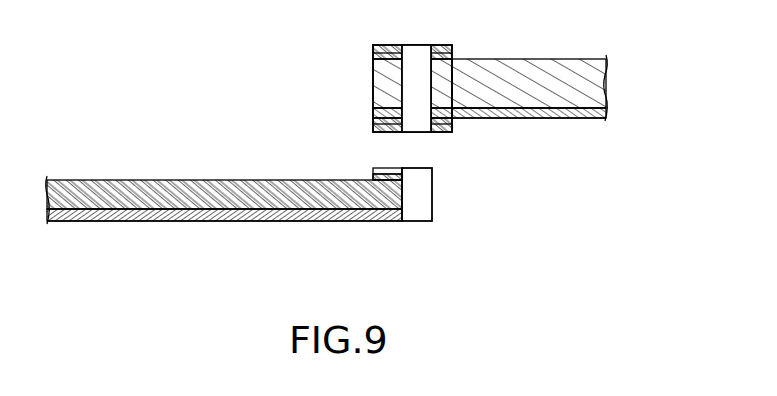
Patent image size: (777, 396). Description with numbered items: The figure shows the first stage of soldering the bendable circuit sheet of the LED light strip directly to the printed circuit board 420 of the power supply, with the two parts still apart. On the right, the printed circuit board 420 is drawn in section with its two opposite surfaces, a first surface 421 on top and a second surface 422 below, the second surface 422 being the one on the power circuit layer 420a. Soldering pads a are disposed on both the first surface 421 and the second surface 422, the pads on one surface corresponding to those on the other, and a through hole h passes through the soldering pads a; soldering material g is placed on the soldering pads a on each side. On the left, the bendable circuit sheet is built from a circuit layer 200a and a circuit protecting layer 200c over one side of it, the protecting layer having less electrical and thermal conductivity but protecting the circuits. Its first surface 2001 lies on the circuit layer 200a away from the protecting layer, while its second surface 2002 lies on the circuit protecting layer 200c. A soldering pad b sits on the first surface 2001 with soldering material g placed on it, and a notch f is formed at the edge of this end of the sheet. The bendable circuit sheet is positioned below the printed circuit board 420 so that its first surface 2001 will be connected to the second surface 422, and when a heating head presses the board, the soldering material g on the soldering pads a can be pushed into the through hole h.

The printed circuit board 420 is at (536, 90).
The first surface 421 is at (523, 56).
The second surface 422 is at (521, 120).
The power circuit layer 420a is at (586, 116).
The circuit layer 200a is at (224, 204).
The first surface 2001 is at (233, 178).
The second surface 2002 is at (233, 223).
The circuit protecting layer 200c is at (152, 212).
The through hole h is at (419, 58).
The soldering material g is at (388, 48).
The soldering pad a is at (388, 56).
The soldering pad b is at (404, 178).
The notch f is at (415, 202).